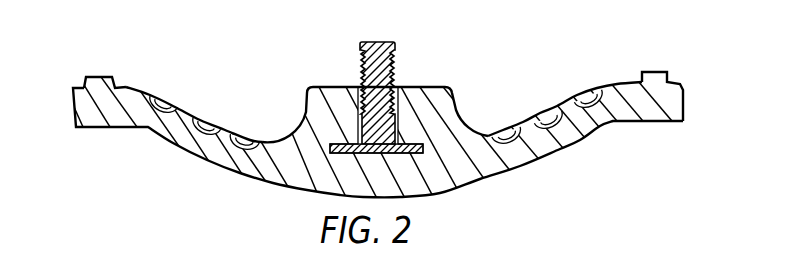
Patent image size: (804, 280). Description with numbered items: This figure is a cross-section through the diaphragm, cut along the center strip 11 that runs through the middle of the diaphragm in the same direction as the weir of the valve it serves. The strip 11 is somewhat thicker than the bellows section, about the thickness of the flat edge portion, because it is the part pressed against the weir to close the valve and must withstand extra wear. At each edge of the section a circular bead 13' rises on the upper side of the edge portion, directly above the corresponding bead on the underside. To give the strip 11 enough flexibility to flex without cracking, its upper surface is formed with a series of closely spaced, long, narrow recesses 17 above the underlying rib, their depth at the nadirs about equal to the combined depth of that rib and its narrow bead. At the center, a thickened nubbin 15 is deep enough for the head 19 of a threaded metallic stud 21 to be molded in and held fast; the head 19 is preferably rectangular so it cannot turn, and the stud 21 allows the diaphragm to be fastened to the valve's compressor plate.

The strip 11 is at (547, 143).
The circular bead 13' is at (393, 79).
The nubbin 15 is at (420, 87).
The elongated recesses 17 is at (162, 95).
The head 19 is at (424, 142).
The threaded metallic stud 21 is at (361, 53).